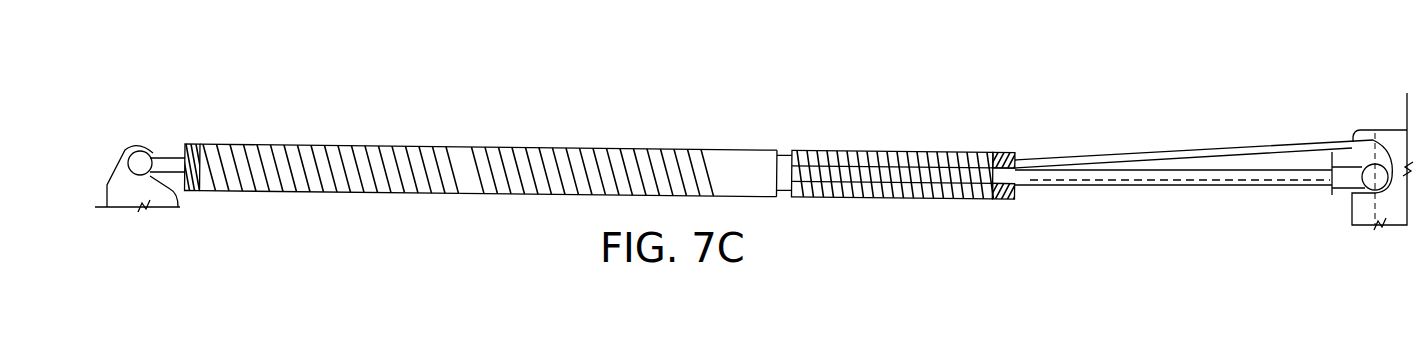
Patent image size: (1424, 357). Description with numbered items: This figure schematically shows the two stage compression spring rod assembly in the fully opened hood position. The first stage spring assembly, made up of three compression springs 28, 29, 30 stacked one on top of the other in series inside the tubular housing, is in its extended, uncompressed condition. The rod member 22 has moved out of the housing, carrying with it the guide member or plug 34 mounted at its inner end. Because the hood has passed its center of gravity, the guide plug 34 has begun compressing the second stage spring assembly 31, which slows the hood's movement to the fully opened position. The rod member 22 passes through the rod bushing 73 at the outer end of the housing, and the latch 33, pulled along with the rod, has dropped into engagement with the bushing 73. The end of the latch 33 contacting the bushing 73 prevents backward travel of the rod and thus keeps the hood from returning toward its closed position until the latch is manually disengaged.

The compression spring 28 is at (236, 181).
The compression spring 29 is at (451, 193).
The compression spring 30 is at (616, 160).
The guide member or plug 34 is at (781, 154).
The second stage spring assembly 31 is at (958, 152).
The rod member 22 is at (1013, 160).
The latch 33 is at (1105, 157).
The rod bushing 73 is at (1003, 199).